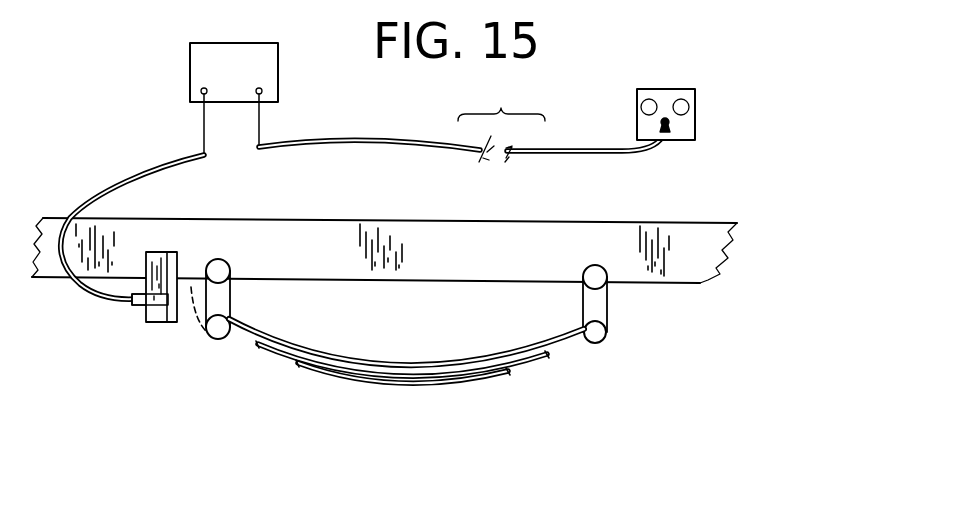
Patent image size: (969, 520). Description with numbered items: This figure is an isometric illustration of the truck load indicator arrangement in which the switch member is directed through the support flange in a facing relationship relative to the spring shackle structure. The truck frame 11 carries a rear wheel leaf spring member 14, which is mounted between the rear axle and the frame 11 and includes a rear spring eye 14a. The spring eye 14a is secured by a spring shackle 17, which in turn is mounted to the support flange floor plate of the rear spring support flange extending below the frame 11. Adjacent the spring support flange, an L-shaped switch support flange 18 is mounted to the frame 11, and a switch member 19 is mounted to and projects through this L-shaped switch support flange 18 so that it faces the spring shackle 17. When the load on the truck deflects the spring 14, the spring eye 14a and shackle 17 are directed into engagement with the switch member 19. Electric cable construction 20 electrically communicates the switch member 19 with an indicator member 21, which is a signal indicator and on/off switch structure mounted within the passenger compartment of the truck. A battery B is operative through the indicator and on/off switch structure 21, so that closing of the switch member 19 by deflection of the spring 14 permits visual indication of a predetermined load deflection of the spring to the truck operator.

The frame 11 is at (476, 269).
The battery B is at (270, 84).
The electric cable construction 20 is at (412, 153).
The indicator member 21 is at (650, 89).
The switch member 19 is at (134, 306).
The L-shaped switch support flange 18 is at (165, 323).
The spring shackle 17 is at (232, 297).
The rear spring eye 14a is at (222, 340).
The rear wheel leaf spring member 14 is at (400, 386).